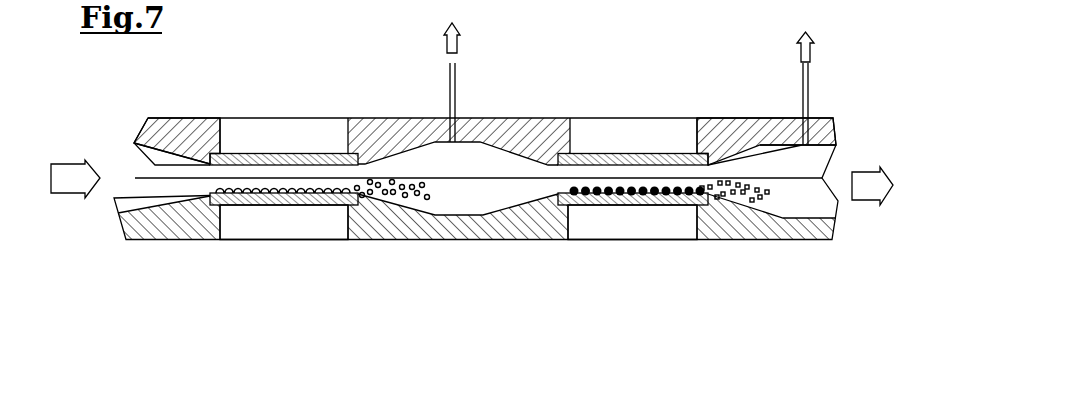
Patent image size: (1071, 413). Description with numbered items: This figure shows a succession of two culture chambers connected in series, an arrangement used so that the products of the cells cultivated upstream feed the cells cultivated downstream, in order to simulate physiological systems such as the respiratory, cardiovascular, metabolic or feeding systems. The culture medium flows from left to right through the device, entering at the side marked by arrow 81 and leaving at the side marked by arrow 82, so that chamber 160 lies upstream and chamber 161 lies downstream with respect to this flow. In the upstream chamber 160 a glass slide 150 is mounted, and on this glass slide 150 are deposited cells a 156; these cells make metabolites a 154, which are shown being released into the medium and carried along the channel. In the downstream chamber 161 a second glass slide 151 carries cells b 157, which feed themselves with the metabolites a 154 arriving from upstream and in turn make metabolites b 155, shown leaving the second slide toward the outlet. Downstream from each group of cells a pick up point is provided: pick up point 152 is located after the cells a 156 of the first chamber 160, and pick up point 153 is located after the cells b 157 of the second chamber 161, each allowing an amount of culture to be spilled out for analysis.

The inlet flow arrow 81 is at (77, 178).
The outlet flow arrow 82 is at (860, 187).
The glass slide 150 is at (255, 210).
The glass slide 151 is at (588, 213).
The pick up point 152 is at (452, 108).
The pick up point 153 is at (802, 110).
The metabolites a 154 is at (385, 192).
The metabolites b 155 is at (745, 197).
The cells a 156 is at (293, 195).
The cells b 157 is at (663, 207).
The culture chamber 160 is at (325, 77).
The culture chamber 161 is at (660, 82).